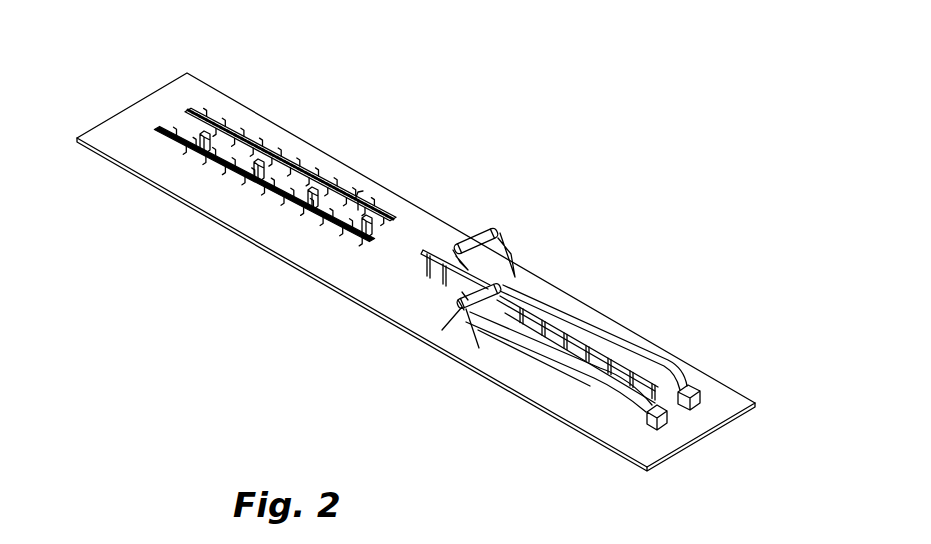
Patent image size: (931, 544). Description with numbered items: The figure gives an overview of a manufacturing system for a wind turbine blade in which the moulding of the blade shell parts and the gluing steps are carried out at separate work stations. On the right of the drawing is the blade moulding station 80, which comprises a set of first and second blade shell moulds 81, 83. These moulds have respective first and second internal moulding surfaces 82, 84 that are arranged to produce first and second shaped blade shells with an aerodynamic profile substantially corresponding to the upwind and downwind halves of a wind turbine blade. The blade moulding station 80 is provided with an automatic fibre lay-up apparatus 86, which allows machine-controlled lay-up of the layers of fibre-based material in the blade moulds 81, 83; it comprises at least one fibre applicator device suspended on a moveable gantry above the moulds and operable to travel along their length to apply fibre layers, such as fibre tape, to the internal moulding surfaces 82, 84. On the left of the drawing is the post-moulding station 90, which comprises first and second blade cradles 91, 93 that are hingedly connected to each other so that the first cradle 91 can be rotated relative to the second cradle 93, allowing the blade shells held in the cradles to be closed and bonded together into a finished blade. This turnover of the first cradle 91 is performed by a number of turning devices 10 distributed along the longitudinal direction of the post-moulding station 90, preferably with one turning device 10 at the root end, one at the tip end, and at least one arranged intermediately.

The turning device 10 is at (223, 127).
The blade moulding station 80 is at (688, 299).
The first blade shell mould 81 is at (562, 382).
The first internal moulding surface 82 is at (660, 418).
The second blade shell mould 83 is at (673, 356).
The second internal moulding surface 84 is at (700, 397).
The automatic fibre lay-up apparatus 86 is at (484, 230).
The post-moulding station 90 is at (377, 113).
The first blade cradle 91 is at (307, 220).
The second blade cradle 93 is at (357, 198).